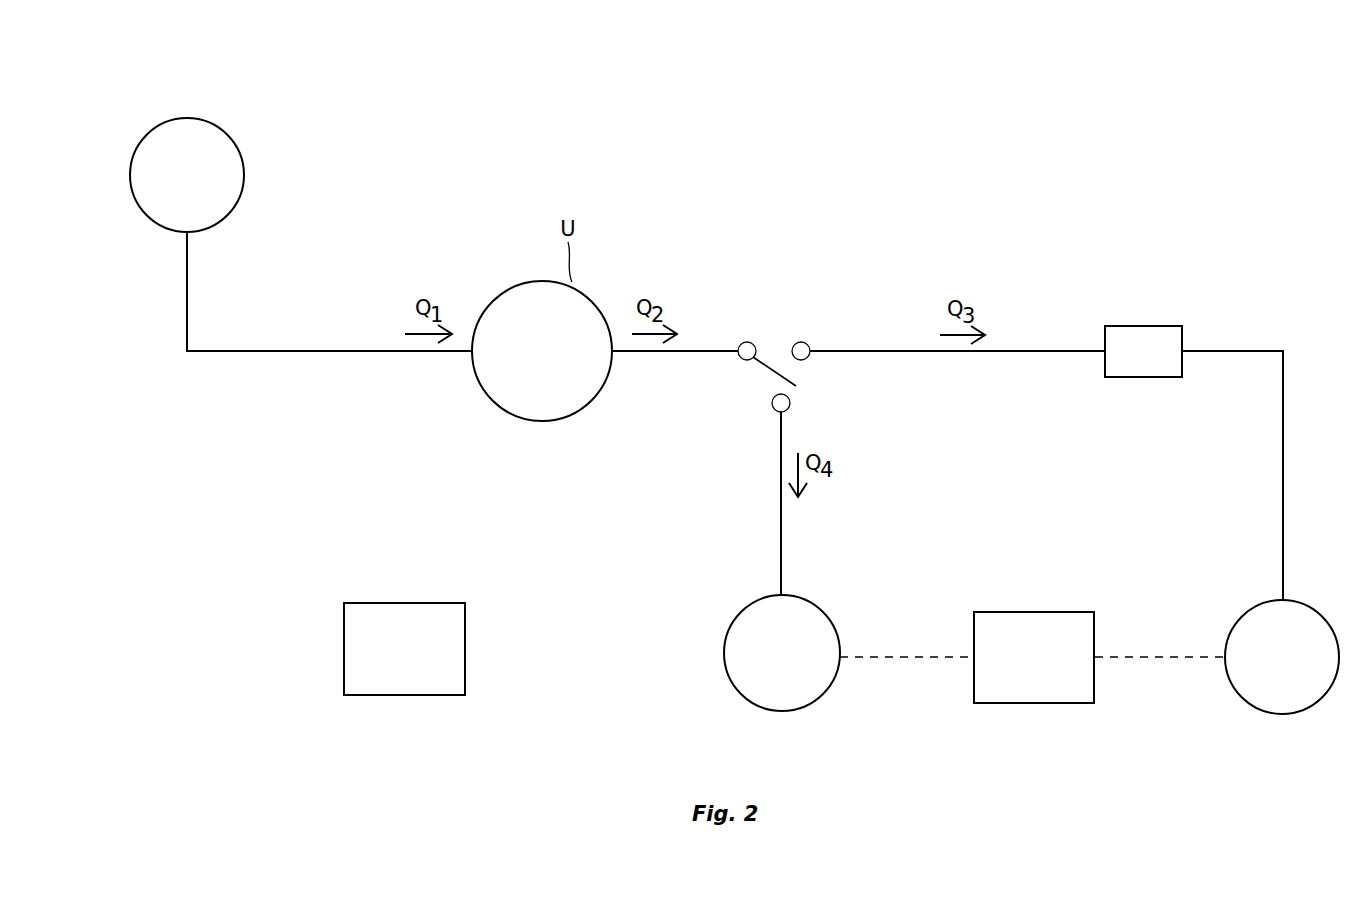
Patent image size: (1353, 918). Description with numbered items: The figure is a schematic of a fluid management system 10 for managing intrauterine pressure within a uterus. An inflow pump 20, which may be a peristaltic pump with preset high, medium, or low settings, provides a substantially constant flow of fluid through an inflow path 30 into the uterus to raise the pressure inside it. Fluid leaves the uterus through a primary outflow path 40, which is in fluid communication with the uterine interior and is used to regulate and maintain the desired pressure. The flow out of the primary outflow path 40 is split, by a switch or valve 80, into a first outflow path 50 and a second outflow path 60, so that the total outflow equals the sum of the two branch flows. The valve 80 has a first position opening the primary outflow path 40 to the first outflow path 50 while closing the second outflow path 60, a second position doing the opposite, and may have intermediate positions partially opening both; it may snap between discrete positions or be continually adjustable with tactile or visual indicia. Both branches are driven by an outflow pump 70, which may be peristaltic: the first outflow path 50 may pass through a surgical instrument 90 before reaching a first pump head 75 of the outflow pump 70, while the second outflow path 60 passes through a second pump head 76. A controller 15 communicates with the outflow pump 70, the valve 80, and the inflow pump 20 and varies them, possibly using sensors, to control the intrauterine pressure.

The fluid management system 10 is at (563, 155).
The controller 15 is at (393, 659).
The inflow pump 20 is at (222, 125).
The inflow path 30 is at (238, 352).
The primary outflow path 40 is at (717, 349).
The first outflow path 50 is at (863, 348).
The second outflow path 60 is at (780, 573).
The outflow pump 70 is at (1030, 703).
The first pump head 75 is at (1226, 624).
The second pump head 76 is at (723, 650).
The valve 80 is at (775, 348).
The surgical instrument 90 is at (1150, 325).